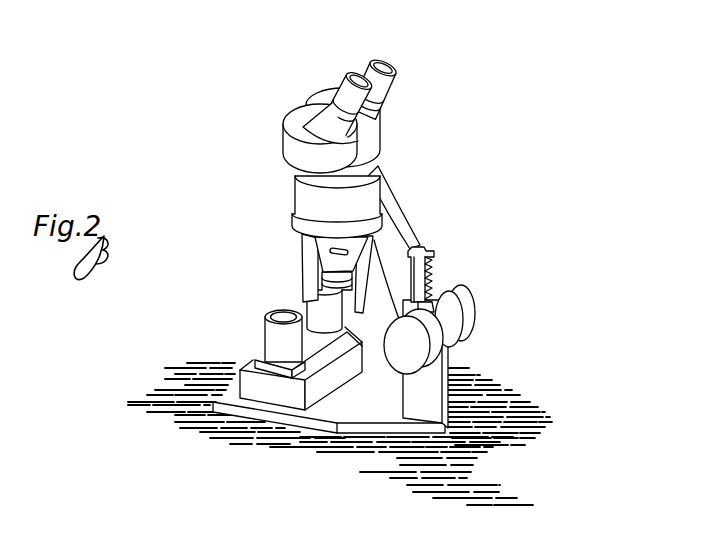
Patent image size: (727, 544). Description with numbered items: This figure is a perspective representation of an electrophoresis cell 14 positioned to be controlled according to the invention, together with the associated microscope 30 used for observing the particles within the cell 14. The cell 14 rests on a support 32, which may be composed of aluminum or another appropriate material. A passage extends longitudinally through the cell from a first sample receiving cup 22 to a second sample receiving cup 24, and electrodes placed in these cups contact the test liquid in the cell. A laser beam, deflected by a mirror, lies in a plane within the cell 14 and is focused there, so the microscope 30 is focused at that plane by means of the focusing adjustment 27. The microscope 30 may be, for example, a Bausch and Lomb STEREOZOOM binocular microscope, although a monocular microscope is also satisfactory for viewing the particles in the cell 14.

The cell 14 is at (318, 344).
The first sample receiving cup 22 is at (283, 337).
The second sample receiving cup 24 is at (326, 313).
The focusing adjustment 27 is at (472, 319).
The microscope 30 is at (307, 193).
The support 32 is at (287, 397).